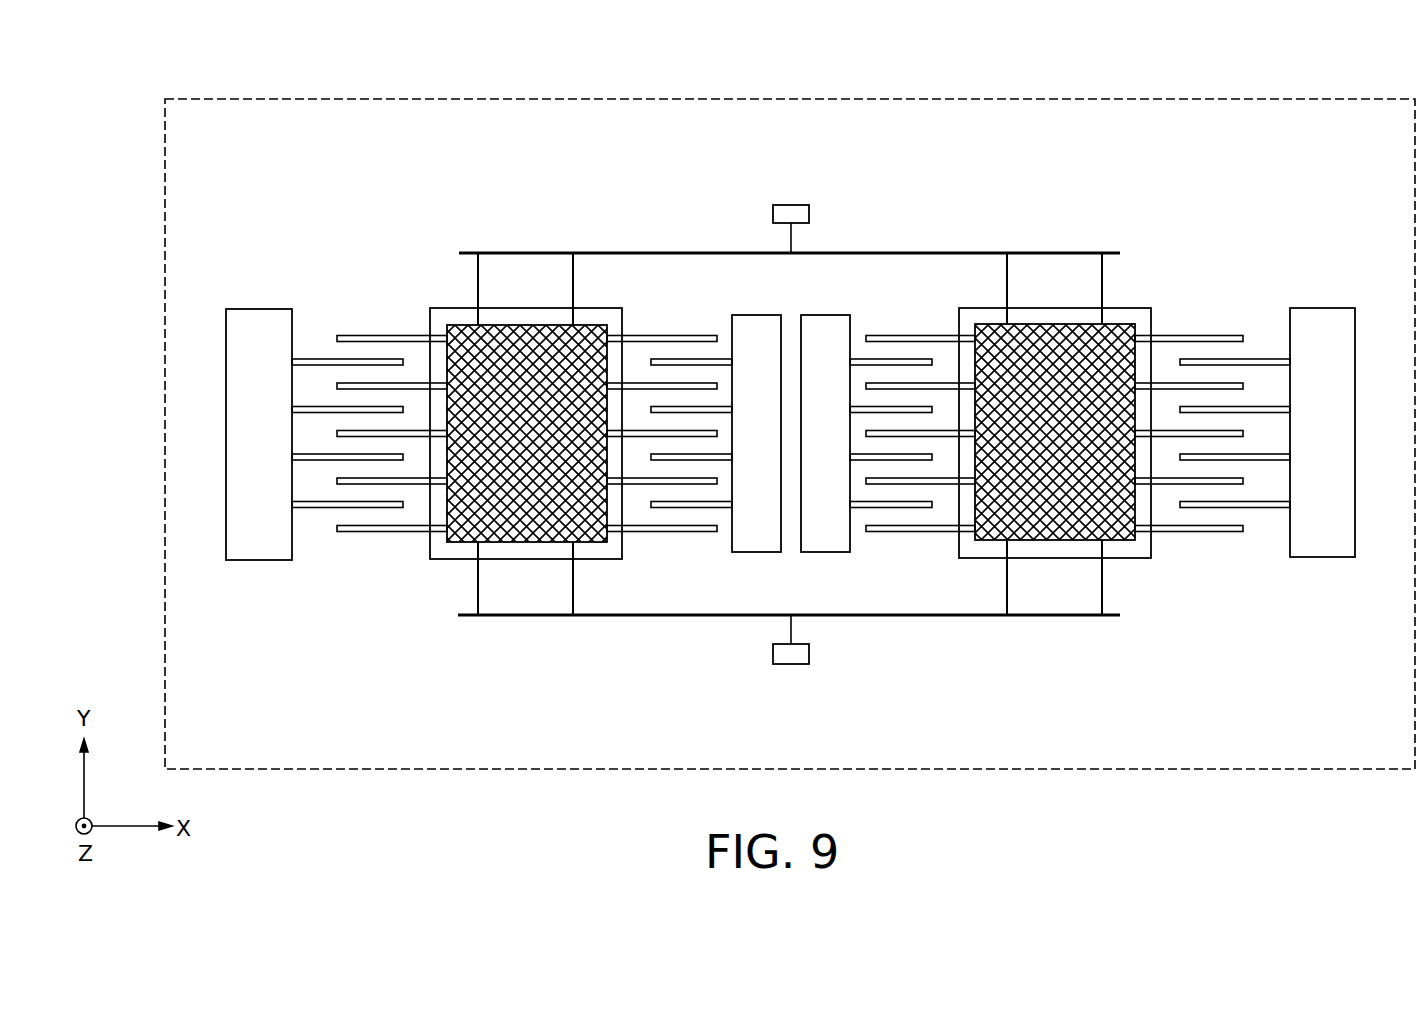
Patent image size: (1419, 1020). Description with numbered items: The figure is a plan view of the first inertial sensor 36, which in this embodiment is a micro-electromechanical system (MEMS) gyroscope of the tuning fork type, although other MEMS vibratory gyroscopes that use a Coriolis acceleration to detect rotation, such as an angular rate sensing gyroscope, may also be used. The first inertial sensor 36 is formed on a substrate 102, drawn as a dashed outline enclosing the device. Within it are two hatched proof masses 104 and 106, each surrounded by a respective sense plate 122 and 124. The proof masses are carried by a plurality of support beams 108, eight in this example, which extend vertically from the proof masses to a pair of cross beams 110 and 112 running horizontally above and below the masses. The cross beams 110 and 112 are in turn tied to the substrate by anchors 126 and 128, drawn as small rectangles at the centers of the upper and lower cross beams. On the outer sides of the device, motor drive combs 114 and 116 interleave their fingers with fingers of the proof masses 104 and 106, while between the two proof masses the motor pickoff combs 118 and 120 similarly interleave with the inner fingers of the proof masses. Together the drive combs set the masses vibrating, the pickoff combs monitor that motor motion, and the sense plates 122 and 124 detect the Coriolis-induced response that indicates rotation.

The first inertial sensor 36 is at (986, 70).
The substrate 102 is at (343, 99).
The proof mass 104 is at (463, 328).
The proof mass 106 is at (1122, 328).
The support beams 108 is at (573, 270).
The cross beam 110 is at (915, 251).
The cross beam 112 is at (952, 617).
The motor drive comb 114 is at (260, 308).
The motor drive comb 116 is at (1322, 308).
The motor pickoff comb 118 is at (757, 313).
The motor pickoff comb 120 is at (825, 313).
The sense plate 122 is at (431, 549).
The sense plate 124 is at (1151, 549).
The anchor 126 is at (791, 205).
The anchor 128 is at (791, 664).